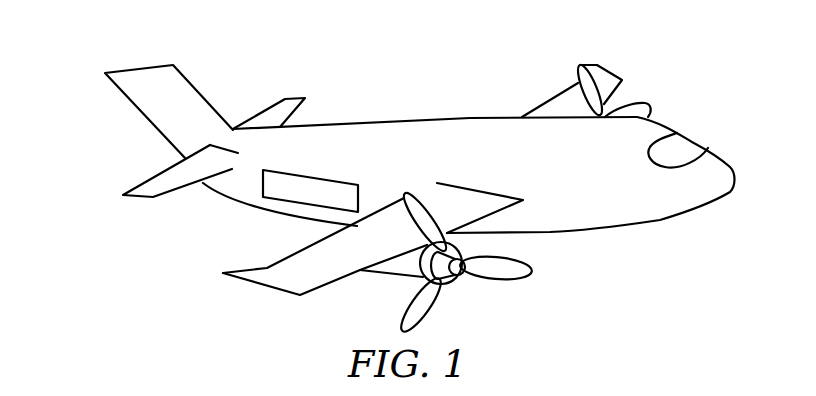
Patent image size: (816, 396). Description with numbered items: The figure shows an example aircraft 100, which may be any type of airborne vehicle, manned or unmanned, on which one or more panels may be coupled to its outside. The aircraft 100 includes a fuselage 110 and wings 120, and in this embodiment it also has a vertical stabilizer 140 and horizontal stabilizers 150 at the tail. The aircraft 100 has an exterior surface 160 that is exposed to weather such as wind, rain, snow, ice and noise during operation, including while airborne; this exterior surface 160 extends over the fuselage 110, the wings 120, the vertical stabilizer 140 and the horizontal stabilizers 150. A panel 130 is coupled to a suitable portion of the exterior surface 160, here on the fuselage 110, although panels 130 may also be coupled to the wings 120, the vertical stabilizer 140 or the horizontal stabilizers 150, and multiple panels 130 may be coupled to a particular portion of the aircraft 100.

The aircraft 100 is at (688, 20).
The fuselage 110 is at (237, 208).
The wings 120 is at (262, 283).
The panel 130 is at (318, 198).
The vertical stabilizer 140 is at (118, 87).
The horizontal stabilizers 150 is at (148, 183).
The exterior surface 160 is at (395, 122).